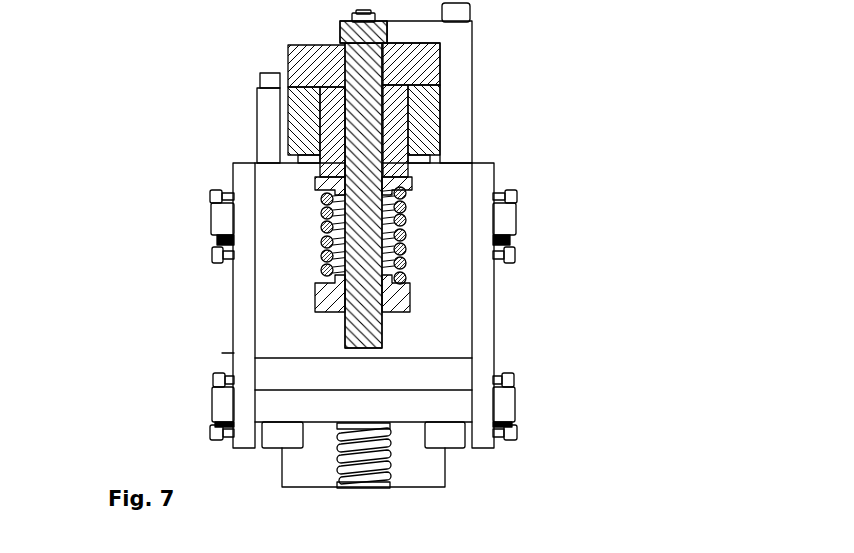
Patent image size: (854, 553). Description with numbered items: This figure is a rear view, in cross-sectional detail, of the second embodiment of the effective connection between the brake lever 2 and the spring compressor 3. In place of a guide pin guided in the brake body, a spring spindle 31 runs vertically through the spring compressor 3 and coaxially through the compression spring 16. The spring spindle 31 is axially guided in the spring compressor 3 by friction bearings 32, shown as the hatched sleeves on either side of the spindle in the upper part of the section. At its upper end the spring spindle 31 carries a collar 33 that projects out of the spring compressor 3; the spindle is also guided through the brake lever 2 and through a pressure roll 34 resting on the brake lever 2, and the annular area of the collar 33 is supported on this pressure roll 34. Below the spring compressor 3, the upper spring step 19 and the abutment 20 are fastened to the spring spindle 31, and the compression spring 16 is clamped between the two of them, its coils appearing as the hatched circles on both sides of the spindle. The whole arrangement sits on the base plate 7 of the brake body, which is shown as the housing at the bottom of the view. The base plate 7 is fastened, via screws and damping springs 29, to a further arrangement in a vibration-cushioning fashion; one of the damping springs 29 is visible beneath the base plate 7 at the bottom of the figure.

The brake lever 2 is at (422, 108).
The spring compressor 3 is at (392, 133).
The base plate 7 is at (453, 408).
The compression spring 16 is at (406, 220).
The upper spring step 19 is at (410, 183).
The abutment 20 is at (410, 298).
The damping springs 29 is at (390, 472).
The spring spindle 31 is at (357, 75).
The friction bearings 32 is at (345, 157).
The collar 33 is at (377, 32).
The pressure roll 34 is at (427, 67).